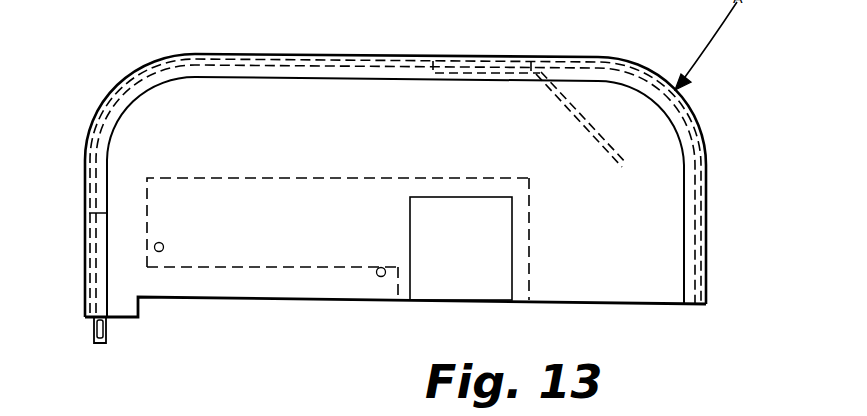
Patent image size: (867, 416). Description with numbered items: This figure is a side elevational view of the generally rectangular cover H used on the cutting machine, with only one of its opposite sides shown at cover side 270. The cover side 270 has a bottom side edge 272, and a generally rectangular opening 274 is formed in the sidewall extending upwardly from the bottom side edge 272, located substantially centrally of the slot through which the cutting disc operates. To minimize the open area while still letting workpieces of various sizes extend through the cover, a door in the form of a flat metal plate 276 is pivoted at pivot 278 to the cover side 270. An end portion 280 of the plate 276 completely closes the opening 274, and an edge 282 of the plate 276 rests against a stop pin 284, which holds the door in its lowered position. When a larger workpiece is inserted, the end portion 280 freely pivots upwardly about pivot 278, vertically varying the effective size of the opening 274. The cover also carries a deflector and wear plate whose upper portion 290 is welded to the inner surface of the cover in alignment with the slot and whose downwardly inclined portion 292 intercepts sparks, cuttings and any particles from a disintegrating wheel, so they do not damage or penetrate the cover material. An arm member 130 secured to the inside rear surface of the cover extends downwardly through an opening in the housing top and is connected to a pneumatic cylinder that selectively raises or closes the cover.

The arm member 130 is at (106, 340).
The cover side 270 is at (635, 290).
The bottom side edge 272 is at (287, 301).
The opening 274 is at (511, 229).
The flat metal plate 276 is at (222, 189).
The pivot 278 is at (164, 245).
The end portion 280 is at (517, 237).
The edge 282 is at (240, 275).
The stop pin 284 is at (379, 276).
The upper portion of deflector and wear plate 290 is at (482, 77).
The downwardly inclined deflector portion 292 is at (585, 132).